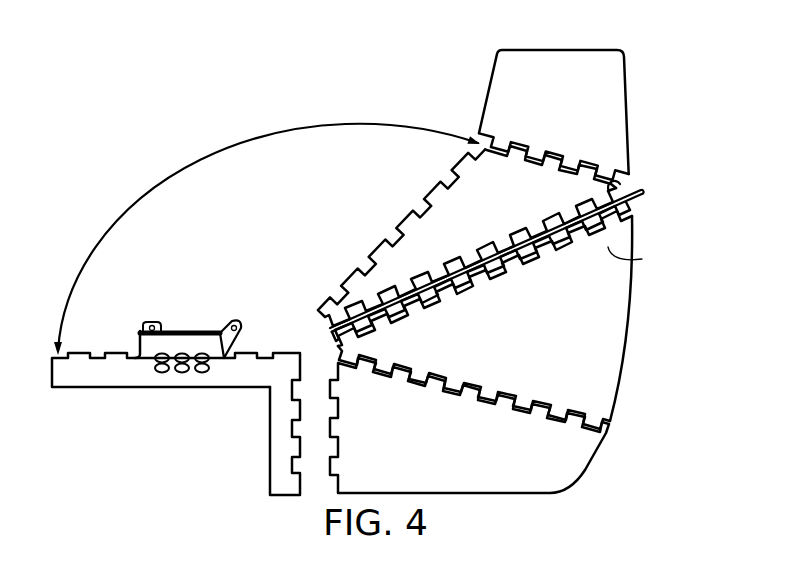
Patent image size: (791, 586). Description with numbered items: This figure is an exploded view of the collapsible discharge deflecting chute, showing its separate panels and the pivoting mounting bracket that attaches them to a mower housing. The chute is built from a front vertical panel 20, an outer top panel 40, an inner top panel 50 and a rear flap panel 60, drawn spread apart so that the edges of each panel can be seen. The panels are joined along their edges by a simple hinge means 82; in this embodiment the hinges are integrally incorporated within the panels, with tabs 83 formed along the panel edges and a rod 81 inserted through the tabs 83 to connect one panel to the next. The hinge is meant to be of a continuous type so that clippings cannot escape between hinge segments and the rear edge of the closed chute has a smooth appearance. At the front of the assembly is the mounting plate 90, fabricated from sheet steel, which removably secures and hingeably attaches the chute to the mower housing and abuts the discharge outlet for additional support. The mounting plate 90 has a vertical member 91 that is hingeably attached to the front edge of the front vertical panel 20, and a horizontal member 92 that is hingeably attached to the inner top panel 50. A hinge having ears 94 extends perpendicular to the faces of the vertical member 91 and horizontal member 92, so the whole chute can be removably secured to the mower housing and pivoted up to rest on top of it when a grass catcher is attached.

The front vertical panel 20 is at (464, 448).
The outer top panel 40 is at (549, 325).
The inner top panel 50 is at (510, 206).
The rear flap panel 60 is at (576, 117).
The rod 81 is at (642, 192).
The hinge means 82 is at (407, 275).
The tabs 83 is at (620, 178).
The mounting plate 90 is at (268, 348).
The vertical member 91 is at (282, 444).
The horizontal member 92 is at (192, 387).
The ears 94 is at (157, 322).